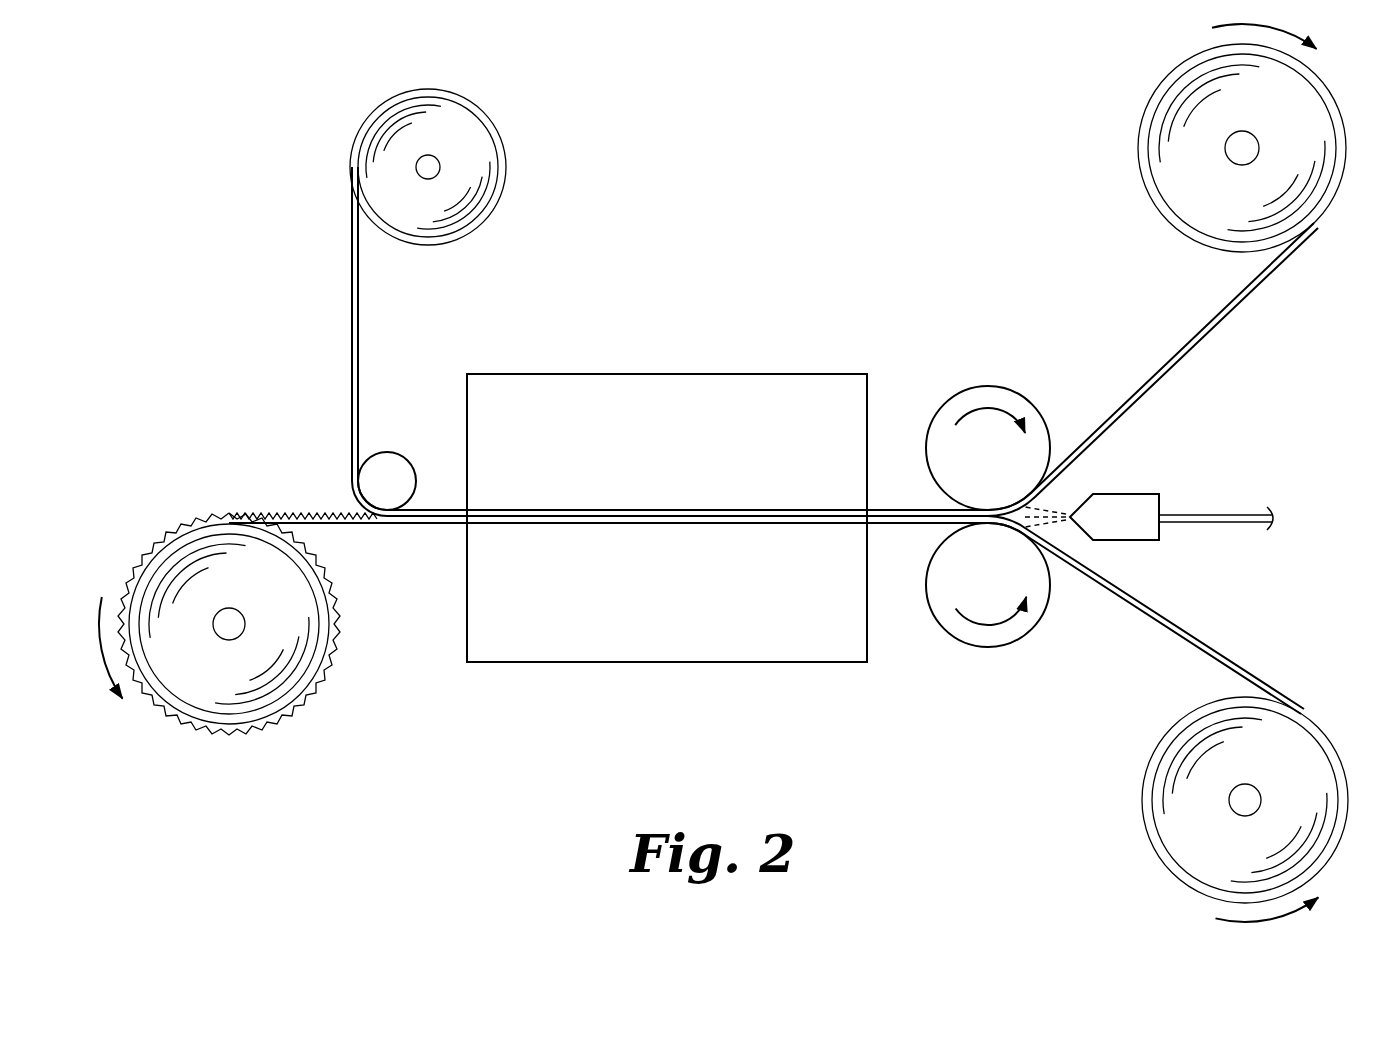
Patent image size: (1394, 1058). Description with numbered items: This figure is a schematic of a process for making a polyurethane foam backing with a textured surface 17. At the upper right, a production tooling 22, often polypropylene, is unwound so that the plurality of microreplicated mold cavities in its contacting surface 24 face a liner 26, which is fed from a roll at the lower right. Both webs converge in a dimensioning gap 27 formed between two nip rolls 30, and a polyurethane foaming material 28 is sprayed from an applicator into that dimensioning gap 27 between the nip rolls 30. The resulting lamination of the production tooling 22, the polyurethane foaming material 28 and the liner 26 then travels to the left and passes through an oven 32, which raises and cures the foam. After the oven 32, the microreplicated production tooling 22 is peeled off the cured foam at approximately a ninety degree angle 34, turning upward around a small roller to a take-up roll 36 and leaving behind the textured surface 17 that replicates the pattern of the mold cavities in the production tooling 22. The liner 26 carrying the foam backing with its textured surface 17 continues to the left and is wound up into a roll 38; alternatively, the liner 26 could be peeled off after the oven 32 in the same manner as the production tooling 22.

The textured surface 17 is at (202, 513).
The production tooling 22 is at (1142, 92).
The contacting surface 24 is at (1172, 362).
The liner 26 is at (1303, 727).
The dimensioning gap 27 is at (938, 508).
The polyurethane foaming material 28 is at (1145, 530).
The nip rolls 30 is at (960, 660).
The oven 32 is at (697, 388).
The peel angle 34 is at (345, 500).
The third supply roll 36 is at (483, 238).
The roll 38 is at (295, 740).